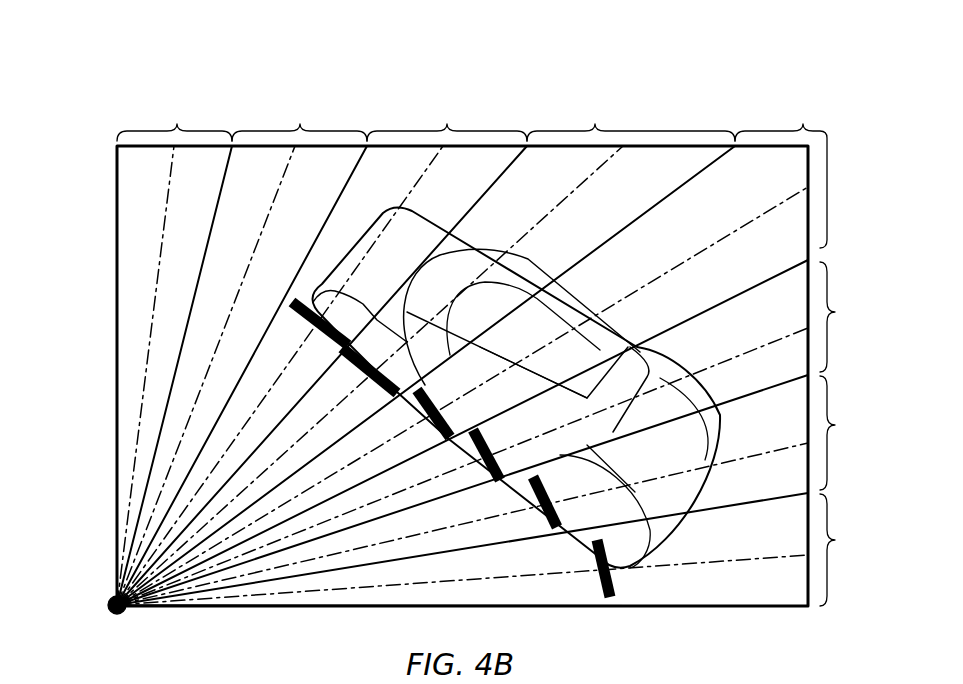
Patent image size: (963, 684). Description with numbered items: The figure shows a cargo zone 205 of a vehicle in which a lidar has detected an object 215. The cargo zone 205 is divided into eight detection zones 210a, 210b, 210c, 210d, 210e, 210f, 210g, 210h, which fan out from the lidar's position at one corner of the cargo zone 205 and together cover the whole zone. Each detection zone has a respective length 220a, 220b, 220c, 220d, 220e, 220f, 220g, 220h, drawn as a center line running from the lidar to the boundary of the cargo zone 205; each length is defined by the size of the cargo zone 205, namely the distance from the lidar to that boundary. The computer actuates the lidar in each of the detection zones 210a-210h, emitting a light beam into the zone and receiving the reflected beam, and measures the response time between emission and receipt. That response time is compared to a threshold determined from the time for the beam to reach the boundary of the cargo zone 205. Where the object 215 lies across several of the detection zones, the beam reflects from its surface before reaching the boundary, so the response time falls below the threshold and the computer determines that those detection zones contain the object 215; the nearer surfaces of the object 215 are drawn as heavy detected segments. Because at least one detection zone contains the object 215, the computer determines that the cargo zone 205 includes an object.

The cargo zone 205 is at (48, 103).
The detection zone 210a is at (174, 350).
The detection zone 210b is at (242, 350).
The detection zone 210c is at (322, 350).
The detection zone 210d is at (426, 350).
The detection zone 210e is at (475, 350).
The detection zone 210f is at (506, 433).
The detection zone 210g is at (508, 490).
The detection zone 210h is at (507, 550).
The length 220a is at (170, 176).
The length 220b is at (283, 177).
The length 220c is at (421, 177).
The length 220d is at (589, 176).
The length 220e is at (773, 208).
The length 220f is at (773, 342).
The length 220g is at (773, 451).
The length 220h is at (773, 557).
The object 215 is at (645, 503).